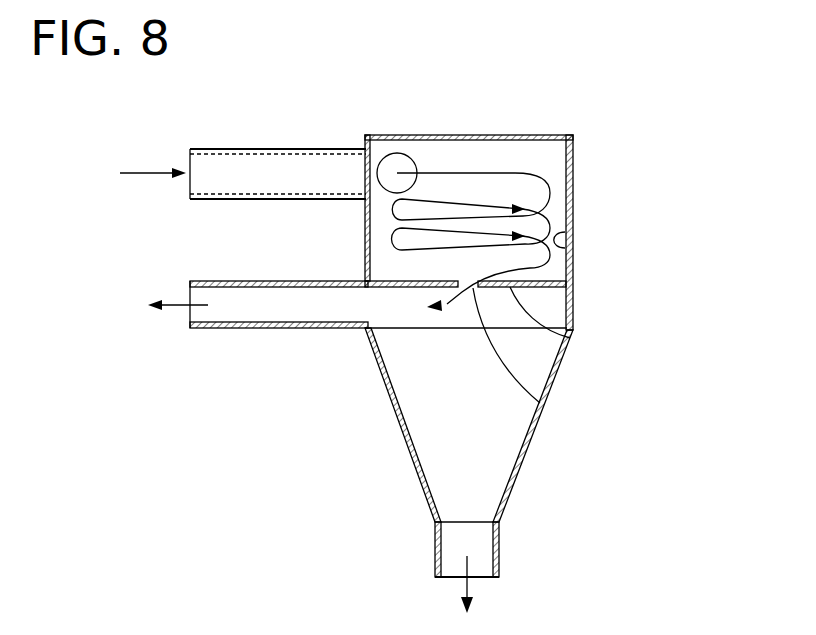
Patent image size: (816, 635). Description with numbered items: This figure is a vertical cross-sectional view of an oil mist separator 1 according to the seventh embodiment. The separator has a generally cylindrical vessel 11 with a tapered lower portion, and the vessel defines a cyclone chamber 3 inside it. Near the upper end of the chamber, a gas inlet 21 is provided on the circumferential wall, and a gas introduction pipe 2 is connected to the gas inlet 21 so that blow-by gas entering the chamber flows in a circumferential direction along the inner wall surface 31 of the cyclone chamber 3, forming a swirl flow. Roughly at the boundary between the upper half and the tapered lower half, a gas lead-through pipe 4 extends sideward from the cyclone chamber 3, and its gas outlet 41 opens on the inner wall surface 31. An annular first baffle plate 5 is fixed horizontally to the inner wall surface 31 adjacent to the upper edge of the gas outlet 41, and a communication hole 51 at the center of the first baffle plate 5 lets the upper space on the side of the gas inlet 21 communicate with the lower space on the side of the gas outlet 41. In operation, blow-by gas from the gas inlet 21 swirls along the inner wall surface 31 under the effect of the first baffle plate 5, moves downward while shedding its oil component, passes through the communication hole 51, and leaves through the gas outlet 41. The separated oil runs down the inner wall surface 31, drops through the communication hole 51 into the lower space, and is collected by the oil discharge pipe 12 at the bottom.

The oil mist separator 1 is at (586, 130).
The gas introduction pipe 2 is at (228, 200).
The gas inlet 21 is at (390, 168).
The cyclone chamber 3 is at (547, 168).
The inner wall surface 31 is at (565, 232).
The vessel 11 is at (572, 297).
The first baffle plate 5 is at (572, 342).
The communication hole 51 is at (552, 398).
The gas lead-through pipe 4 is at (228, 330).
The gas outlet 41 is at (385, 352).
The oil discharge pipe 12 is at (437, 552).